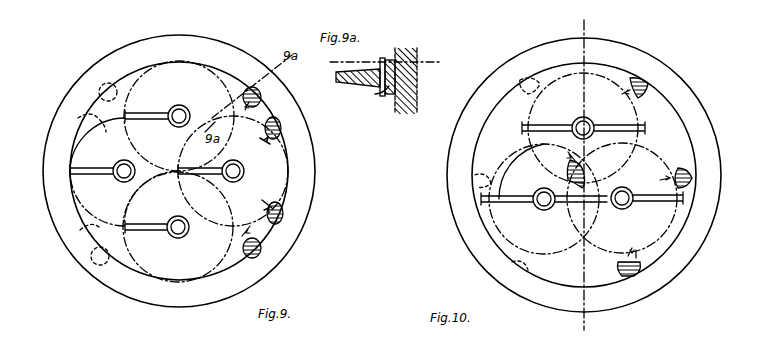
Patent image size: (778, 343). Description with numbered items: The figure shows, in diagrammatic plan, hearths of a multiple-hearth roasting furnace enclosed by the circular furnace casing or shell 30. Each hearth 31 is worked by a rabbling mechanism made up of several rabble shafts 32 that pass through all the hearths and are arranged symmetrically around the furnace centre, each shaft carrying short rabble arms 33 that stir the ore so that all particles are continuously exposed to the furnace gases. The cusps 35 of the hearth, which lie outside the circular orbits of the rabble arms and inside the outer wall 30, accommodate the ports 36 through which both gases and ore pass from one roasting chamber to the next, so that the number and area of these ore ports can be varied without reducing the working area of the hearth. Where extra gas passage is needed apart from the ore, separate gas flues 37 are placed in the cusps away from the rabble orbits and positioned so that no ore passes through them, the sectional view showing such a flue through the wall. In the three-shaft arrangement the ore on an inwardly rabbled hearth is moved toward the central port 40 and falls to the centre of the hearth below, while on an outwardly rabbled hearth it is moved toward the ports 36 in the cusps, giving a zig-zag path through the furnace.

In FIG. 9, the furnace casing or shell 30 is at (315, 178).
In FIG. 9A, the furnace casing or shell 30 is at (417, 82).
In FIG. 10, the furnace casing or shell 30 is at (700, 255).
In FIG. 9, the hearth 31 is at (157, 106).
In FIG. 9A, the hearth 31 is at (336, 72).
In FIG. 10, the hearth 31 is at (583, 120).
In FIG. 9, the rabble shaft 32 is at (178, 170).
In FIG. 10, the rabble shaft 32 is at (594, 168).
In FIG. 9, the rabble arm 33 is at (117, 122).
In FIG. 10, the rabble arm 33 is at (610, 158).
In FIG. 9, the cusp 35 is at (116, 146).
In FIG. 10, the cusp 35 is at (646, 165).
In FIG. 9, the port 36 is at (78, 120).
In FIG. 10, the port 36 is at (522, 80).
In FIG. 9, the gas flue 37 is at (100, 89).
In FIG. 9A, the gas flue 37 is at (417, 66).
In FIG. 10, the central port 40 is at (566, 166).